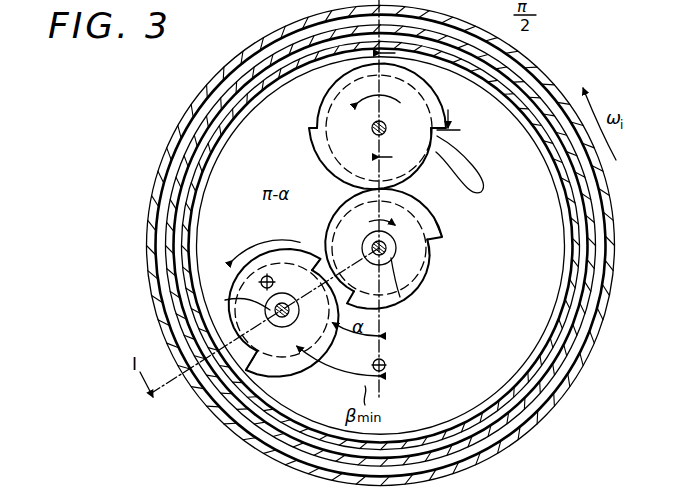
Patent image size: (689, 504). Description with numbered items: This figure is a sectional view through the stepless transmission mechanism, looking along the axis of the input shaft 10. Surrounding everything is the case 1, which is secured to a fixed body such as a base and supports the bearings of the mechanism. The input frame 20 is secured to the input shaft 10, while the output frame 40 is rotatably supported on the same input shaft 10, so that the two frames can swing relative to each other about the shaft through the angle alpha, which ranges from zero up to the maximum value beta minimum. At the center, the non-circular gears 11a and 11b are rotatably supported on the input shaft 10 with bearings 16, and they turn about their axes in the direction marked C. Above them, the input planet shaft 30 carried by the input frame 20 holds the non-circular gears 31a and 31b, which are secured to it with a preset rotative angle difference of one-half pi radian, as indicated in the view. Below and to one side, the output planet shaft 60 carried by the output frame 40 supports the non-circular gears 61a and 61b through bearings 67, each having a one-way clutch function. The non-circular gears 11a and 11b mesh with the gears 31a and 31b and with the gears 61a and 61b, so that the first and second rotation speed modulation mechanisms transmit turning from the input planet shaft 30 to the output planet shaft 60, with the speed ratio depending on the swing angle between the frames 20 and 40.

The case 1 is at (381, 243).
The input frame 20 is at (381, 235).
The output frame 40 is at (339, 245).
The input shaft 10 is at (415, 268).
The non-circular gear 11a is at (432, 252).
The non-circular gear 11b is at (437, 220).
The bearings 16 is at (398, 292).
The input planet shaft 30 is at (372, 123).
The non-circular gear 31a is at (456, 160).
The non-circular gear 31b is at (445, 120).
The output planet shaft 60 is at (262, 297).
The non-circular gear 61a is at (246, 374).
The non-circular gear 61b is at (303, 376).
The bearings 67 is at (228, 305).